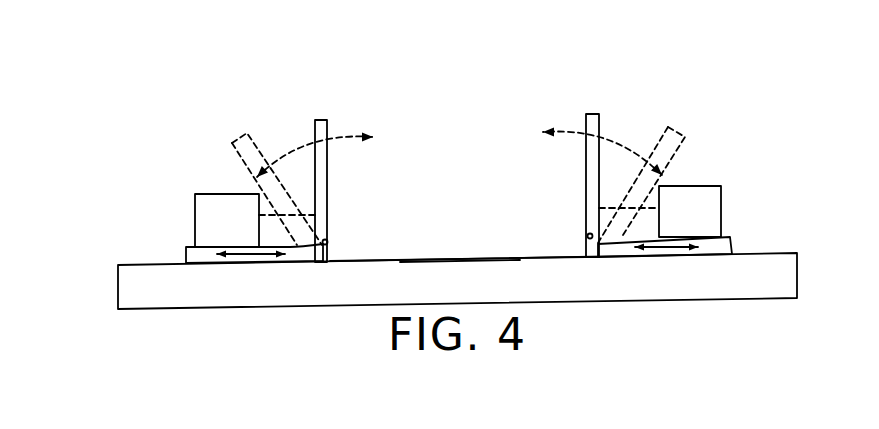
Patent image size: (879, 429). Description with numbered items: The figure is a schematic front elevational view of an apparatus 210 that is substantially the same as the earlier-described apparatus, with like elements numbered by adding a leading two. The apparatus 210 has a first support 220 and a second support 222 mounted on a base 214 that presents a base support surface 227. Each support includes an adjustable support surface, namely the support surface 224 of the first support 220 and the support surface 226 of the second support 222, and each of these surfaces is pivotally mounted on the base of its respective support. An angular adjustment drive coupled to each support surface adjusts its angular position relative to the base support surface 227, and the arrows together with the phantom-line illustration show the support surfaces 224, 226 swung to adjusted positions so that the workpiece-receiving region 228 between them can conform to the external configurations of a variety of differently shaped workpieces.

The apparatus 210 is at (538, 107).
The base plate 214 is at (118, 298).
The first support 220 is at (690, 172).
The second support 222 is at (228, 135).
The adjustable support surface 224 is at (587, 167).
The adjustable support surface 226 is at (330, 192).
The base support surface 227 is at (428, 259).
The workpiece receiving region 228 is at (443, 137).